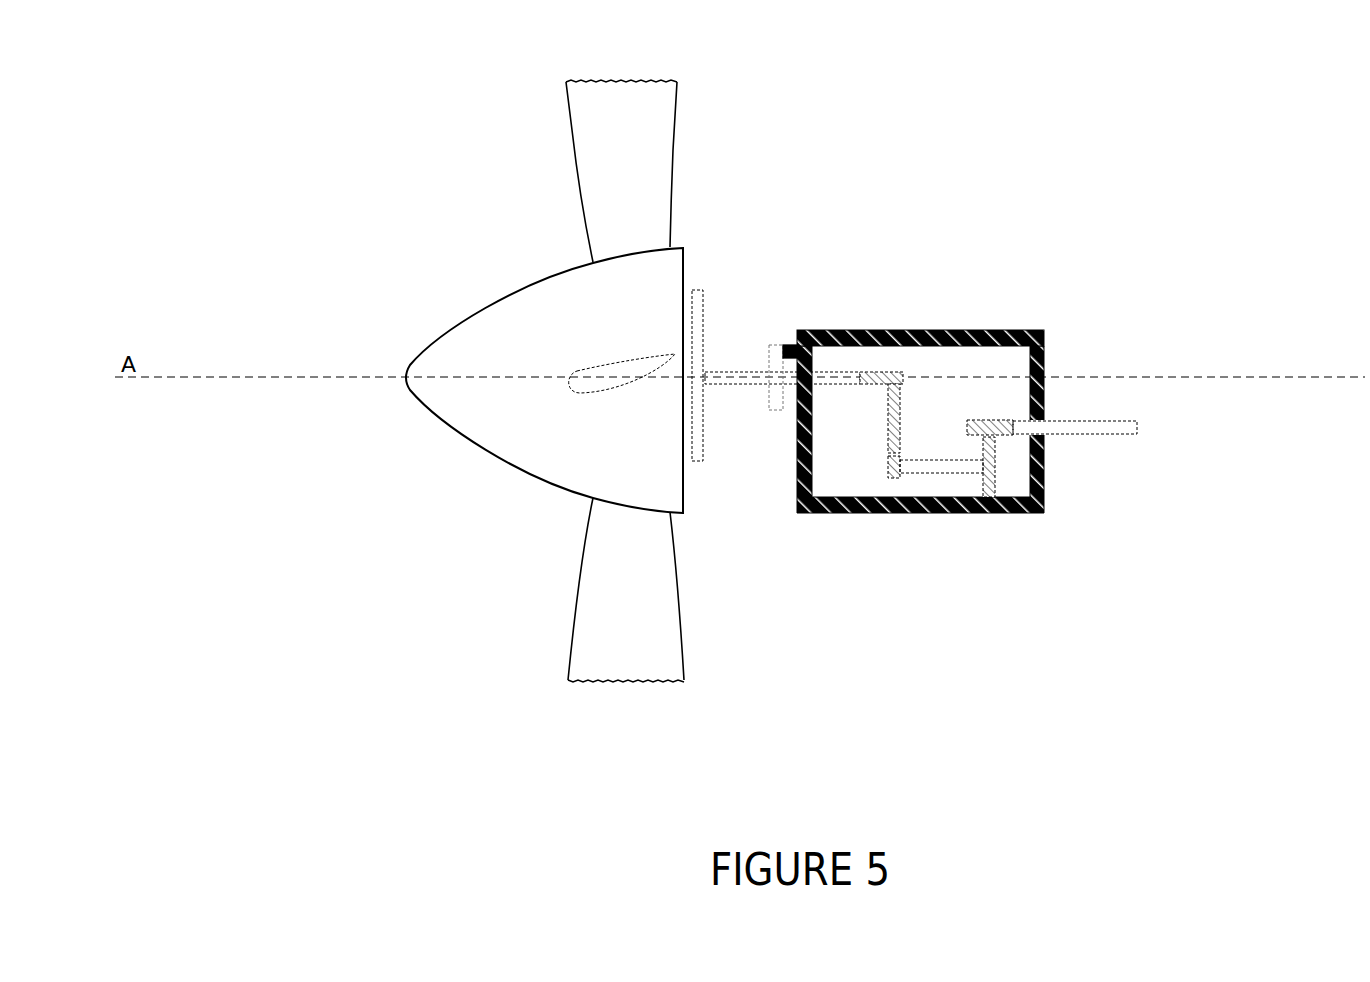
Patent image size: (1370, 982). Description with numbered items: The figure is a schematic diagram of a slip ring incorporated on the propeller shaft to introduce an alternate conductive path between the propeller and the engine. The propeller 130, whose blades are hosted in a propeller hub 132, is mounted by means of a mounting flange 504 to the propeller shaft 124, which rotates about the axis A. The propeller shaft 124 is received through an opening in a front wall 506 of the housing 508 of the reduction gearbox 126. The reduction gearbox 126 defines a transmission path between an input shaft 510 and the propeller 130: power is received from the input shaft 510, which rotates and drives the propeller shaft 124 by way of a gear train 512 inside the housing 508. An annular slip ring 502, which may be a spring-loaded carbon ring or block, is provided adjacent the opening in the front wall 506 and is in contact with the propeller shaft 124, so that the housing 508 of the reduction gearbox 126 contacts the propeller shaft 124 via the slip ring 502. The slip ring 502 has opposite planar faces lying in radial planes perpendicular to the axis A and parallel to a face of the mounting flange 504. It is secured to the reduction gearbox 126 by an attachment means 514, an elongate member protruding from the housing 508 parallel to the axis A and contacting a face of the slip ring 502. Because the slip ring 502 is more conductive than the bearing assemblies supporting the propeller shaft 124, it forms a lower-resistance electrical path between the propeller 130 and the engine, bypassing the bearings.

The propeller shaft 124 is at (730, 370).
The reduction gearbox 126 is at (952, 397).
The propeller 130 is at (588, 117).
The propeller hub 132 is at (502, 343).
The slip ring 502 is at (768, 392).
The mounting flange 504 is at (695, 290).
The front wall 506 is at (797, 478).
The housing 508 is at (998, 329).
The input shaft 510 is at (1095, 434).
The gear train 512 is at (933, 478).
The attachment means 514 is at (788, 348).